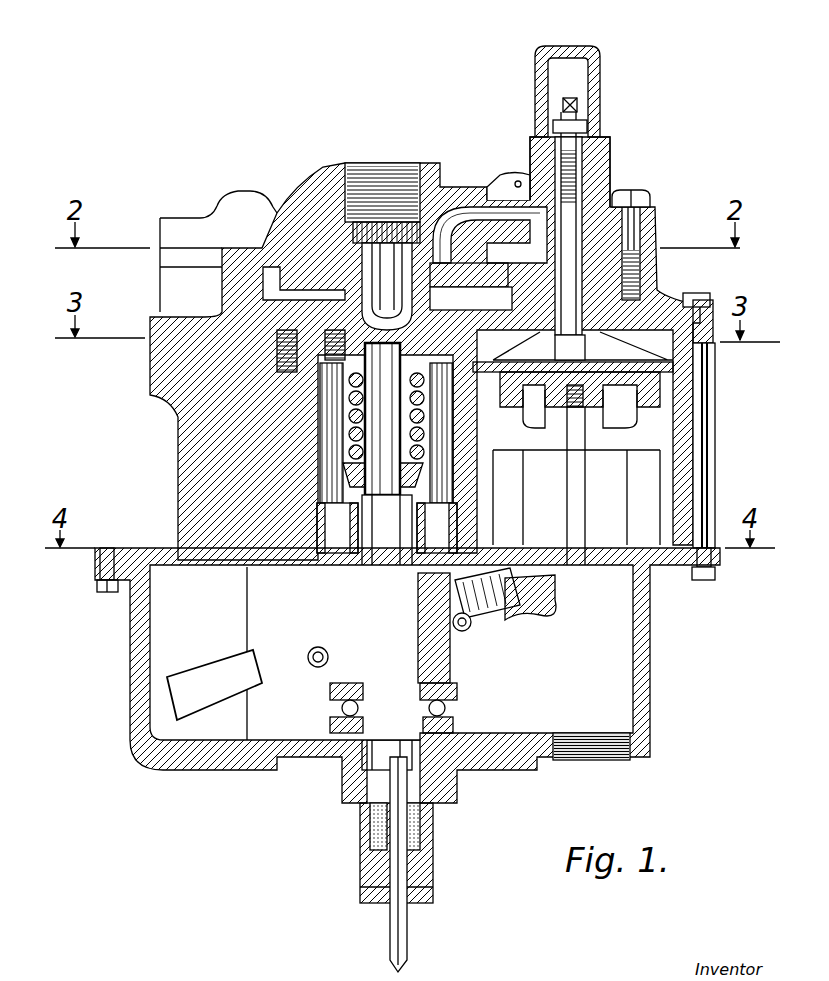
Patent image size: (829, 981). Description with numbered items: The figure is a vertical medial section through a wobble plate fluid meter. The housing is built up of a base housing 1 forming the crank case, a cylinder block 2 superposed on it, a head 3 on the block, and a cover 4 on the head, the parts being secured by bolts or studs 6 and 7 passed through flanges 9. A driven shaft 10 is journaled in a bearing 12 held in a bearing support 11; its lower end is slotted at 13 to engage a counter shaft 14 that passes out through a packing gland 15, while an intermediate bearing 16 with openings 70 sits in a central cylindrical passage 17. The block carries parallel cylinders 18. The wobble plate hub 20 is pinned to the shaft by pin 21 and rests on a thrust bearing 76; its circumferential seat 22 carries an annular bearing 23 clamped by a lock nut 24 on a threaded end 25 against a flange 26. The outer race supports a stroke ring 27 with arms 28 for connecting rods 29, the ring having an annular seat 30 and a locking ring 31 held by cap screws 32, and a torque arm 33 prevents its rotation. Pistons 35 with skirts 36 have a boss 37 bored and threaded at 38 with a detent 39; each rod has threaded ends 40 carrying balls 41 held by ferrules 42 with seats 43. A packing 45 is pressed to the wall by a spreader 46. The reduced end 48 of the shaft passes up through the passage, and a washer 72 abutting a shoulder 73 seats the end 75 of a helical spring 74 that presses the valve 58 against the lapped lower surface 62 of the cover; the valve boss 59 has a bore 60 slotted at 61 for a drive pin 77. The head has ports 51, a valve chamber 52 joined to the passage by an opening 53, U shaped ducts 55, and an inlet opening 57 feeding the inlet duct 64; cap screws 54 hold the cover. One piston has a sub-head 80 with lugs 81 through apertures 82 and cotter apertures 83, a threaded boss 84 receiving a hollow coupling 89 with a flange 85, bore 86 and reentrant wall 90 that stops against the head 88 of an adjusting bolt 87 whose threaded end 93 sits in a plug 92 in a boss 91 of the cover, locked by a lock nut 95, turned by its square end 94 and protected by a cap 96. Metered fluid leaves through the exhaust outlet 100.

The base housing 1 is at (155, 690).
The cylinder block 2 is at (190, 492).
The head 3 is at (180, 296).
The cover 4 is at (224, 215).
The bolts or studs 6 is at (100, 580).
The bolts or studs 7 is at (705, 456).
The flanges 9 is at (150, 320).
The driven shaft 10 is at (478, 762).
The bearing support 11 is at (520, 770).
The bearing 12 is at (372, 812).
The slot 13 is at (352, 785).
The shaft 14 is at (392, 928).
The packing gland 15 is at (365, 860).
The intermediate supporting bearing 16 is at (437, 528).
The cylindrical passage 17 is at (300, 486).
The cylinders 18 is at (660, 484).
The hub 20 is at (448, 693).
The pin 21 is at (382, 645).
The circumferential seat 22 is at (445, 660).
The annular type bearing 23 is at (468, 630).
The lock nut 24 is at (350, 462).
The threaded end 25 is at (318, 645).
The flange 26 is at (330, 745).
The spider or stroke ring member 27 is at (250, 760).
The arms 28 is at (552, 610).
The connecting rods 29 is at (600, 492).
The annular seat 30 is at (280, 750).
The locking ring 31 is at (495, 625).
The cap screws 32 is at (520, 620).
The torque arm 33 is at (215, 700).
The pistons 35 is at (690, 410).
The skirt 36 is at (690, 430).
The boss 37 is at (560, 410).
The threaded bore 38 is at (565, 420).
The parti-spherical detent 39 is at (548, 408).
The threaded ends 40 is at (590, 418).
The balls 41 is at (578, 415).
The threaded ferrules 42 is at (587, 420).
The parti-spherical seats 43 is at (570, 430).
The packing 45 is at (718, 338).
The resilient spreader 46 is at (700, 302).
The reduced end 48 is at (387, 556).
The ports 51 is at (540, 240).
The valve chamber 52 is at (287, 330).
The opening 53 is at (333, 330).
The cap screws 54 is at (643, 197).
The U shaped ducts 55 is at (483, 238).
The inlet opening 57 is at (378, 172).
The valve 58 is at (302, 258).
The central boss 59 is at (150, 372).
The central bore 60 is at (185, 380).
The slots 61 is at (203, 385).
The lower surface 62 is at (322, 258).
The inlet duct 64 is at (385, 282).
The openings 70 is at (440, 538).
The annular washer or flange 72 is at (300, 470).
The shoulder 73 is at (337, 458).
The helical spring 74 is at (320, 432).
The end of the spring 75 is at (425, 460).
The thrust bearing 76 is at (455, 745).
The drive pin 77 is at (300, 420).
The sub-head 80 is at (690, 360).
The lugs 81 is at (660, 393).
The apertures 82 is at (690, 368).
The apertures 83 is at (615, 420).
The threaded boss 84 is at (625, 312).
The circumferential flange 85 is at (655, 265).
The cylindrical bore 86 is at (655, 215).
The adjusting bolt 87 is at (615, 210).
The head 88 is at (657, 285).
The hollow coupling 89 is at (655, 242).
The reentrant wall 90 is at (650, 195).
The hollow threaded boss 91 is at (610, 185).
The plug 92 is at (605, 150).
The threaded end 93 is at (560, 145).
The square end 94 is at (563, 100).
The lock nut 95 is at (556, 125).
The cap 96 is at (600, 52).
The exhaust outlet 100 is at (590, 768).